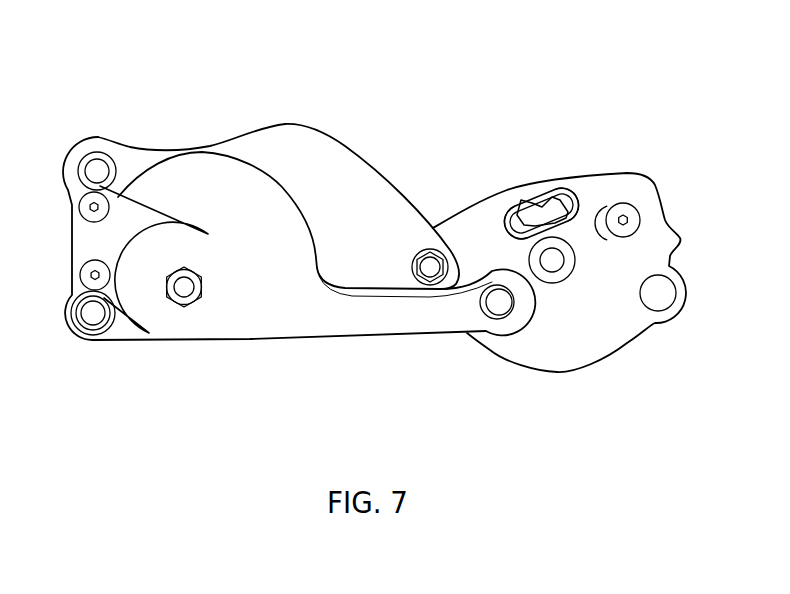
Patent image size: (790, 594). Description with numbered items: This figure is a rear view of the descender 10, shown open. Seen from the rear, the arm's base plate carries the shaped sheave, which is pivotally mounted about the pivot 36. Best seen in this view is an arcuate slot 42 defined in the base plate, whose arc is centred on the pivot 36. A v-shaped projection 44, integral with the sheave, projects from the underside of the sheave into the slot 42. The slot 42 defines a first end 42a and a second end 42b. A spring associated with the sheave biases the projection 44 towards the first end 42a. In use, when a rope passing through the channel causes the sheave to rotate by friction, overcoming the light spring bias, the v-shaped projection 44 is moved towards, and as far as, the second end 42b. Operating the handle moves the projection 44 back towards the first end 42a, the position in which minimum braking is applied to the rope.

The cable tensioning assembly 10 is at (268, 101).
The pivot 36 is at (552, 265).
The arcuate slot 42 is at (538, 189).
The first end of slot 42a is at (503, 220).
The second end of slot 42b is at (580, 198).
The v-shaped projection 44 is at (514, 214).